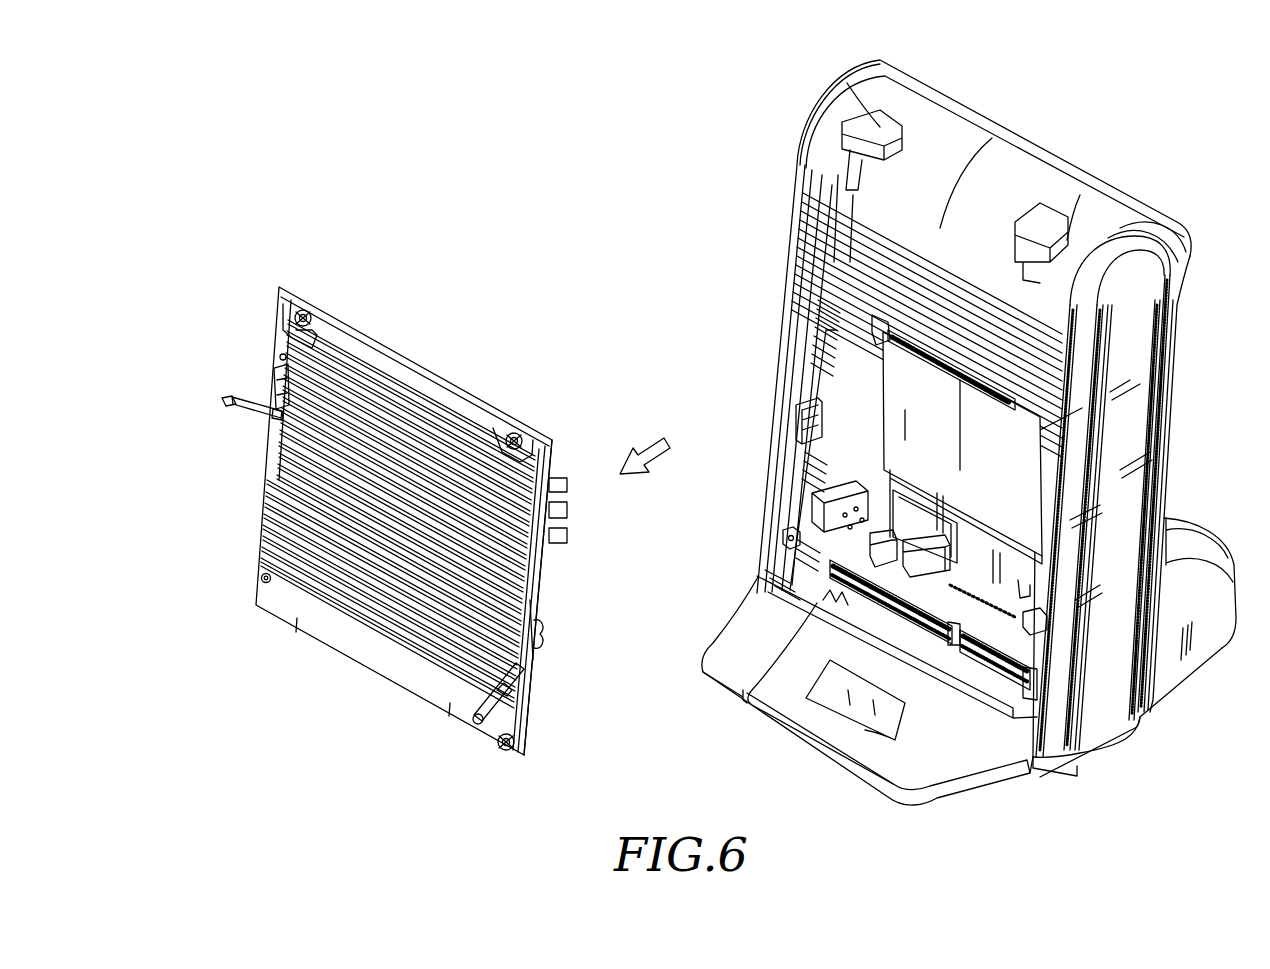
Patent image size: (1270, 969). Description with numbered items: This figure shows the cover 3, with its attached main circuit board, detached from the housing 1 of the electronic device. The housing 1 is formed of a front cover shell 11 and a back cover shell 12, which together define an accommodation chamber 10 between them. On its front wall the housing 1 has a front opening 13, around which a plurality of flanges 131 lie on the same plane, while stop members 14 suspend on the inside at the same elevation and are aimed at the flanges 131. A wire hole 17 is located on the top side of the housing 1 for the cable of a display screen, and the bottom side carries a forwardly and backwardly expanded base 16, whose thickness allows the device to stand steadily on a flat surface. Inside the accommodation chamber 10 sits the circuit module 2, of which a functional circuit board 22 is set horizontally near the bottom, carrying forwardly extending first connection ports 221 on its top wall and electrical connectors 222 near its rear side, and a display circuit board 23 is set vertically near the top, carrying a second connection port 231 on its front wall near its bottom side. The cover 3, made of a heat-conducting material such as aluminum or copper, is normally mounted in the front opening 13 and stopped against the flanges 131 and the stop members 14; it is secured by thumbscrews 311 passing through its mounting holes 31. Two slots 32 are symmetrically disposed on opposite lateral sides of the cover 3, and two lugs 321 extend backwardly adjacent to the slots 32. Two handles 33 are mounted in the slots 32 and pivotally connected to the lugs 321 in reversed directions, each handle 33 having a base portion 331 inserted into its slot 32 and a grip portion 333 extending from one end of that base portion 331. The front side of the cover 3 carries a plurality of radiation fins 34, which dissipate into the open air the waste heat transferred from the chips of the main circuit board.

The housing 1 is at (1060, 134).
The accommodation chamber 10 is at (990, 450).
The front cover shell 11 is at (950, 120).
The back cover shell 12 is at (1134, 206).
The front opening 13 is at (777, 400).
The flanges 131 is at (798, 347).
The stop members 14 is at (798, 426).
The base 16 is at (820, 735).
The wire hole 17 is at (852, 158).
The circuit module 2 is at (688, 548).
The functional circuit board 22 is at (840, 524).
The first connection ports 221 is at (820, 583).
The electrical connectors 222 is at (1026, 594).
The display circuit board 23 is at (882, 324).
The second connection port 231 is at (890, 346).
The cover 3 is at (432, 372).
The mounting holes 31 is at (261, 578).
The thumbscrews 311 is at (296, 316).
The slots 32 is at (538, 594).
The lugs 321 is at (546, 632).
The handles 33 is at (222, 395).
The base portion 331 is at (278, 424).
The grip portion 333 is at (228, 404).
The radiation fins 34 is at (373, 366).